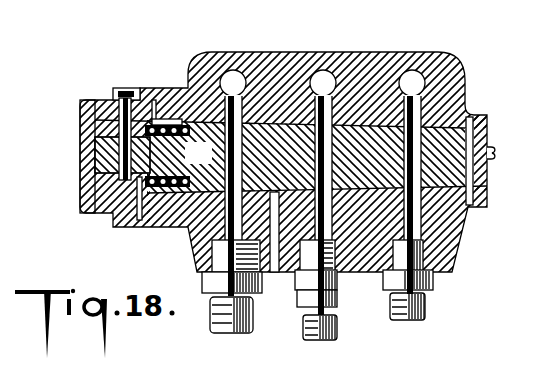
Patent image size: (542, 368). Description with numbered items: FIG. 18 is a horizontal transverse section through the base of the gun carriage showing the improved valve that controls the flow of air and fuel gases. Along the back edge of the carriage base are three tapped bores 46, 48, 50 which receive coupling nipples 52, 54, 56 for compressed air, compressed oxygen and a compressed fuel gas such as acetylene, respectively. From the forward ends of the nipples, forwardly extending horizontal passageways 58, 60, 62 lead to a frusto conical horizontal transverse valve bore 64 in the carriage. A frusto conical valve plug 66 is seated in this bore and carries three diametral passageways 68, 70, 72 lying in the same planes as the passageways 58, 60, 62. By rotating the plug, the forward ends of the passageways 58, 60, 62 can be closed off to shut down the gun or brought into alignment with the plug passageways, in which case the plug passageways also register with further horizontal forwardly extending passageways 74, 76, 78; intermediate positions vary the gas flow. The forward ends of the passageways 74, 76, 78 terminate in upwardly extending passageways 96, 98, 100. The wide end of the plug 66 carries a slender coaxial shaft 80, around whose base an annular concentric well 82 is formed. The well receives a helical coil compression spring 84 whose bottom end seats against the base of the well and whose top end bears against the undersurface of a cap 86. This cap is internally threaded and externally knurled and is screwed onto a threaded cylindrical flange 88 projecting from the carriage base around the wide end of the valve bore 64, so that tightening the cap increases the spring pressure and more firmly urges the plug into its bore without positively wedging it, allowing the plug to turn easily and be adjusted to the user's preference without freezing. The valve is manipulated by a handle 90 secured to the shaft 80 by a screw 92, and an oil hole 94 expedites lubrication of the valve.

The tapped bore 46 is at (196, 250).
The tapped bore 48 is at (297, 272).
The tapped bore 50 is at (383, 278).
The coupling nipple 52 is at (224, 332).
The coupling nipple 54 is at (318, 340).
The coupling nipple 56 is at (408, 320).
The horizontal passageway 58 is at (226, 214).
The horizontal passageway 60 is at (332, 216).
The horizontal passageway 62 is at (413, 217).
The valve bore 64 is at (473, 186).
The valve plug 66 is at (476, 118).
The diametral passageway 68 is at (243, 154).
The diametral passageway 70 is at (332, 160).
The diametral passageway 72 is at (413, 162).
The horizontal passageway 74 is at (244, 109).
The horizontal passageway 76 is at (332, 113).
The horizontal passageway 78 is at (415, 115).
The shaft 80 is at (85, 165).
The annular well 82 is at (174, 181).
The compression spring 84 is at (160, 97).
The cap 86 is at (145, 88).
The threaded flange 88 is at (180, 92).
The handle 90 is at (80, 118).
The screw 92 is at (126, 88).
The oil hole 94 is at (286, 232).
The upwardly extending passageway 96 is at (244, 70).
The upwardly extending passageway 98 is at (329, 70).
The upwardly extending passageway 100 is at (418, 70).